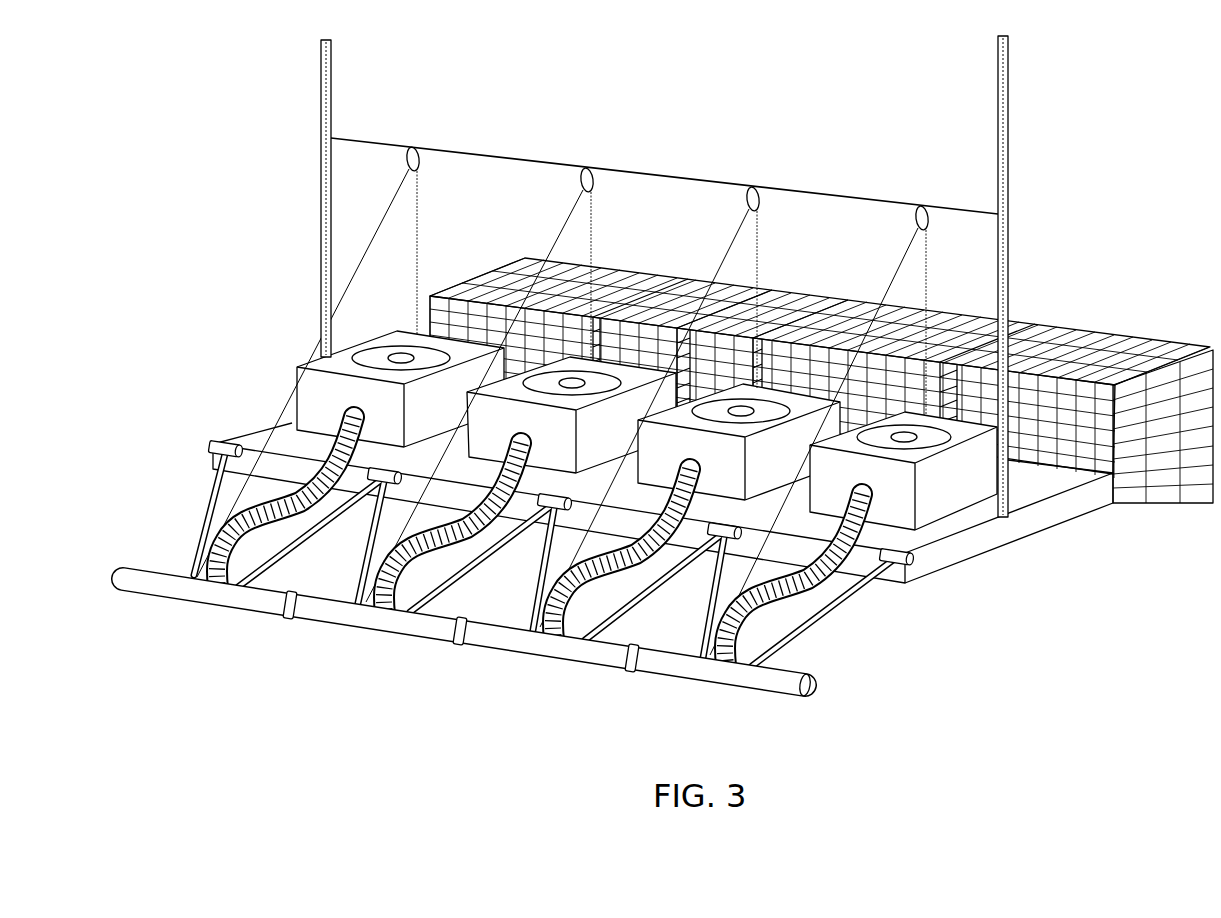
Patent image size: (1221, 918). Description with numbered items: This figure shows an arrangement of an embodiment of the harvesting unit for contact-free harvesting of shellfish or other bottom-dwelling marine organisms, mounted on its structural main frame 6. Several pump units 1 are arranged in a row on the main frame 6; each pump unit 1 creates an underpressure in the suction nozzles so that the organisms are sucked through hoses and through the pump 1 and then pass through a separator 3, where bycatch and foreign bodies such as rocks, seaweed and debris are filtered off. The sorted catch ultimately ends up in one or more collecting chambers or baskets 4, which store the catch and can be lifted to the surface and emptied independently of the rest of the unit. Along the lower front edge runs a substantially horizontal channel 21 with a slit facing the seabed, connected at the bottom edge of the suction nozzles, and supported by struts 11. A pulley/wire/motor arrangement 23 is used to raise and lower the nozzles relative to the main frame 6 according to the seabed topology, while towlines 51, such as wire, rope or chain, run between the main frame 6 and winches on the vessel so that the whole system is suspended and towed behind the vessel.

The pump unit 1 is at (328, 368).
The separator 3 is at (821, 380).
The collecting chamber (basket) 4 is at (1084, 330).
The main frame 6 is at (1010, 536).
The strut 11 is at (222, 512).
The horizontal channel 21 is at (797, 667).
The pulley/wire/motor arrangement 23 is at (413, 147).
The towlines 51 is at (1009, 157).